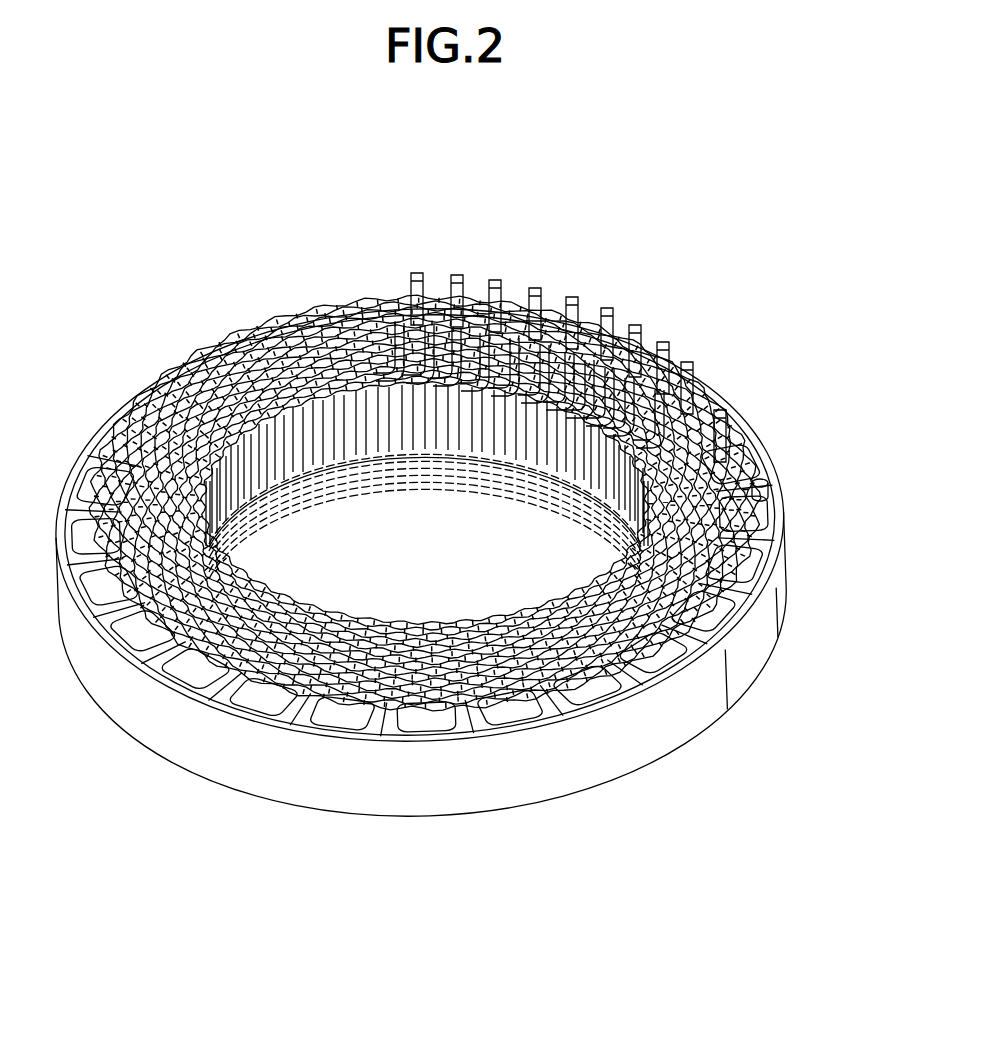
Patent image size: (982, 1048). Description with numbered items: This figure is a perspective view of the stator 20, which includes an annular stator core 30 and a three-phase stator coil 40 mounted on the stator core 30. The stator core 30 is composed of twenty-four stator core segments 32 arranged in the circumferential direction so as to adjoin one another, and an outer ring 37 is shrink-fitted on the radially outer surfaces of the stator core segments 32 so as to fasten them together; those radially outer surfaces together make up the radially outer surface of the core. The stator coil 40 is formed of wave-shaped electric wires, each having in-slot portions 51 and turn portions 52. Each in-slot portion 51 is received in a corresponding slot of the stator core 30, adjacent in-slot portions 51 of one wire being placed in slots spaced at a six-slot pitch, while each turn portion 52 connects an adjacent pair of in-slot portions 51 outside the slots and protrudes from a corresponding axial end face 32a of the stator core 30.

The stator 20 is at (745, 352).
The stator core 30 is at (732, 702).
The stator core segment 32 is at (745, 603).
The axial end face 32a is at (99, 470).
The outer ring 37 is at (652, 748).
The stator coil 40 is at (266, 313).
The in-slot portion 51 is at (403, 452).
The turn portion 52 is at (387, 712).